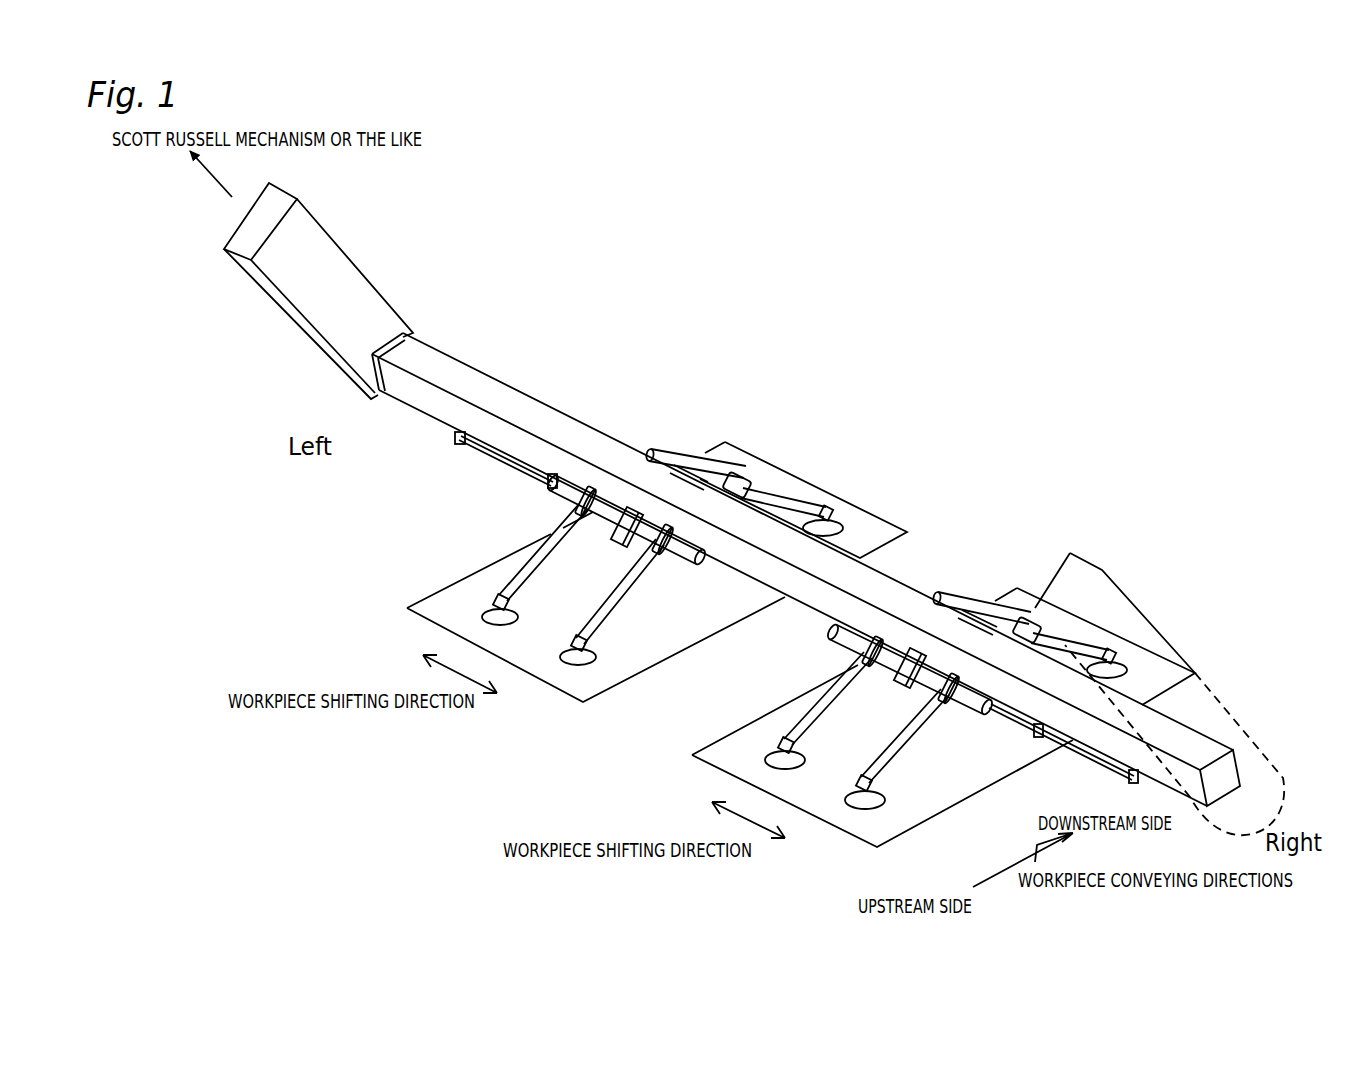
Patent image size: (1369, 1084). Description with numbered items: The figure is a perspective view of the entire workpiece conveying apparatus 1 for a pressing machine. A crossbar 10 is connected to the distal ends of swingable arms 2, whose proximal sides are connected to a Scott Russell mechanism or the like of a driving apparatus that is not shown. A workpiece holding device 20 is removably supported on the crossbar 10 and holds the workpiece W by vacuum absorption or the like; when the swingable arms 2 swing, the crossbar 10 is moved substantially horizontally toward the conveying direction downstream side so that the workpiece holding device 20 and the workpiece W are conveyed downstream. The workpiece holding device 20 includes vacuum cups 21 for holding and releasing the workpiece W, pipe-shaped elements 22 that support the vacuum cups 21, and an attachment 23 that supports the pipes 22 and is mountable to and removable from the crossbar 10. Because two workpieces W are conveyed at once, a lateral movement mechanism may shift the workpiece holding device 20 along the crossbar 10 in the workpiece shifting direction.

The workpiece conveying apparatus 1 is at (885, 325).
The swingable arms 2 is at (357, 256).
The crossbar 10 is at (455, 362).
The workpiece holding device 20 is at (652, 450).
The vacuum cups 21 is at (500, 576).
The pipe-shaped elements 22 is at (680, 565).
The attachment 23 is at (620, 500).
The workpiece W is at (780, 470).